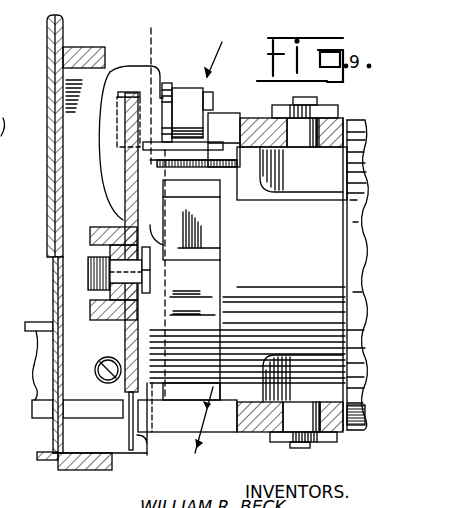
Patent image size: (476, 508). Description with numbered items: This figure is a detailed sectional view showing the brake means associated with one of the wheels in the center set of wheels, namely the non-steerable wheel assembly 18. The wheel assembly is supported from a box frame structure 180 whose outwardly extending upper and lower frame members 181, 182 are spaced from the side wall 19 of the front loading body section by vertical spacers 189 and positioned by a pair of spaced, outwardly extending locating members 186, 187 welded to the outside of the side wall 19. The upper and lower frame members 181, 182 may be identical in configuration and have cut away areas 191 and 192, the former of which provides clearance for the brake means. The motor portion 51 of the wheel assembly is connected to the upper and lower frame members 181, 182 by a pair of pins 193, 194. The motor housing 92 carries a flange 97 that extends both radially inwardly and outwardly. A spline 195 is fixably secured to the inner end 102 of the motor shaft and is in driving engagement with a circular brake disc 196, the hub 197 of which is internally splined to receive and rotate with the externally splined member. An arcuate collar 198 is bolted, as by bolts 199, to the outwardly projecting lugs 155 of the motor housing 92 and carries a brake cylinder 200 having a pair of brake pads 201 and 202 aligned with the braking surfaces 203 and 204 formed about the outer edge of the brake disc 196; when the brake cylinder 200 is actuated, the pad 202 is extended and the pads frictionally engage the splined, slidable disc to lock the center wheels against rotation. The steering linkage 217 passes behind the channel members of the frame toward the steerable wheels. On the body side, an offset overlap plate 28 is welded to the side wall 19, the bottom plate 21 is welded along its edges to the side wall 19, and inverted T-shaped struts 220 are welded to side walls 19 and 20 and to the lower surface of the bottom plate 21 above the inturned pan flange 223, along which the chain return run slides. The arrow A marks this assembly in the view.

The non-steerable wheel assembly 18 is at (227, 55).
The side wall 19 is at (53, 268).
The side wall 20 is at (33, 378).
The bottom plate 21 is at (1, 418).
The offset overlap plate 28 is at (46, 57).
The motor portion 51 is at (194, 420).
The motor housing 92 is at (200, 385).
The flange 97 is at (380, 112).
The inner end of motor shaft 102 is at (150, 276).
The outwardly projecting ears or lugs 155 is at (210, 238).
The box frame structure 180 is at (192, 457).
The upper frame member 181 is at (268, 118).
The lower frame member 182 is at (261, 432).
The locating member 186 is at (80, 468).
The locating member 187 is at (101, 47).
The vertical spacers 189 is at (48, 118).
The cut away area 191 is at (224, 117).
The cut away area 192 is at (220, 420).
The pin 193 is at (326, 117).
The pin 194 is at (307, 441).
The spline 195 is at (118, 226).
The circular brake disc 196 is at (106, 357).
The hub 197 is at (107, 320).
The arcuate collar 198 is at (212, 196).
The bolts 199 is at (236, 192).
The brake cylinder 200 is at (205, 58).
The brake pad 201 is at (100, 168).
The brake pad 202 is at (152, 32).
The braking surface 203 is at (128, 433).
The braking surface 204 is at (147, 437).
The steering linkage 217 is at (107, 370).
The inverted T-shaped strut 220 is at (38, 343).
The pan flange 223 is at (13, 116).
The direction arrow A is at (181, 439).